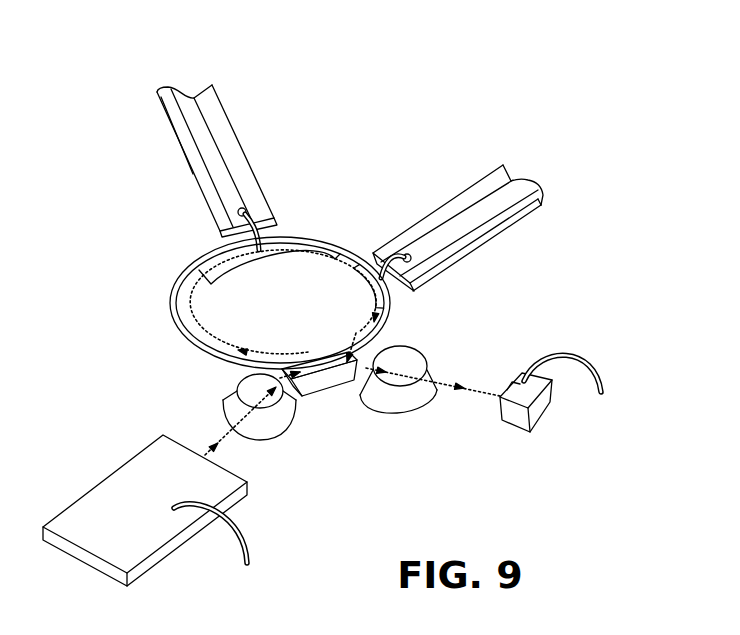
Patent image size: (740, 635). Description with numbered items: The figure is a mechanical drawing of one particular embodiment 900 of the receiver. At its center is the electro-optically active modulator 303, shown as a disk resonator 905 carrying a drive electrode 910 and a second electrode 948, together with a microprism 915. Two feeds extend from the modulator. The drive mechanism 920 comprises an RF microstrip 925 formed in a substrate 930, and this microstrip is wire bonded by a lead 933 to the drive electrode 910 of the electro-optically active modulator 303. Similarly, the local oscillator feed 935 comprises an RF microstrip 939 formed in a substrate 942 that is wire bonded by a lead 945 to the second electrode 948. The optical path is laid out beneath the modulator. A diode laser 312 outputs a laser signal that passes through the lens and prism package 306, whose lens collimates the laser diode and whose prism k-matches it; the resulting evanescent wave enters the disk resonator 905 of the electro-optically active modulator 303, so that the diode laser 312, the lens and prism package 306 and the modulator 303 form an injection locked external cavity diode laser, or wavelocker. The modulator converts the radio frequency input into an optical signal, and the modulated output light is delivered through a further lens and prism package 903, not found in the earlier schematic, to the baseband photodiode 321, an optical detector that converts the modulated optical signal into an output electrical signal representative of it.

The receiver embodiment 900 is at (461, 42).
The drive mechanism 920 is at (139, 89).
The RF microstrip 925 is at (217, 133).
The substrate 930 is at (250, 167).
The lead 933 is at (239, 211).
The local oscillator feed 935 is at (555, 181).
The RF microstrip 939 is at (457, 212).
The substrate 942 is at (473, 183).
The lead 945 is at (395, 252).
The electro-optically active modulator 303 is at (151, 231).
The disk resonator 905 is at (187, 342).
The drive electrode 910 is at (205, 275).
The second electrode 948 is at (392, 302).
The microprism 915 is at (325, 388).
The lens and prism package 306 is at (283, 438).
The lens and prism package 903 is at (432, 373).
The diode laser 312 is at (101, 477).
The baseband photodiode 321 is at (540, 418).